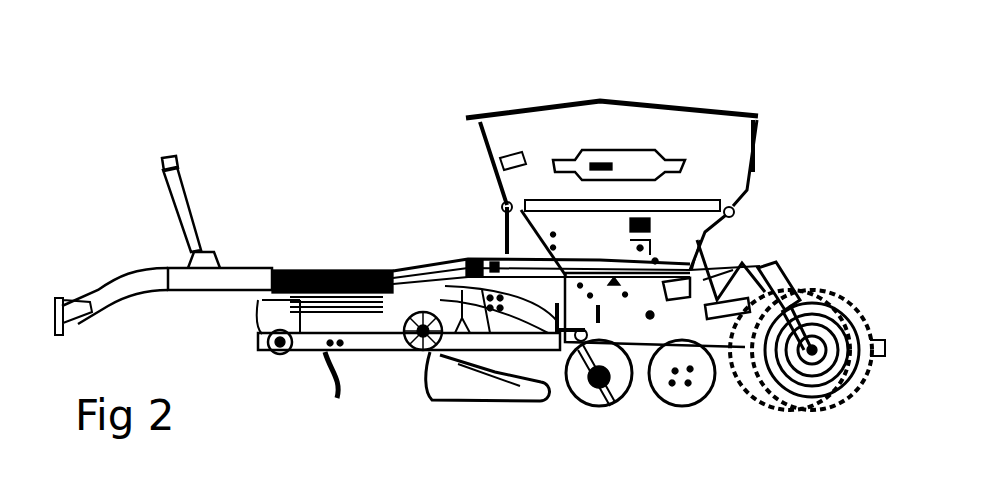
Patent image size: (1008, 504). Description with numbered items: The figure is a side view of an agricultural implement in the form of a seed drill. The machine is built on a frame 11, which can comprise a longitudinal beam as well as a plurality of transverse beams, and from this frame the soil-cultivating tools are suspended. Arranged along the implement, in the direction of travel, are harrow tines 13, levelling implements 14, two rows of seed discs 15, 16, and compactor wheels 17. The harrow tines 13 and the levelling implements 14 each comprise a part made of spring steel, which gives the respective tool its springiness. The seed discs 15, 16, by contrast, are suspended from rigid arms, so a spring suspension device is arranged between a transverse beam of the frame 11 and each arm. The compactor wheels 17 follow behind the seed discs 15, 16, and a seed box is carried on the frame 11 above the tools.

The frame 11 is at (196, 282).
The harrow tines 13 is at (335, 408).
The levelling implements 14 is at (411, 352).
The seed discs 15 is at (594, 398).
The seed discs 16 is at (703, 400).
The compactor wheels 17 is at (818, 400).